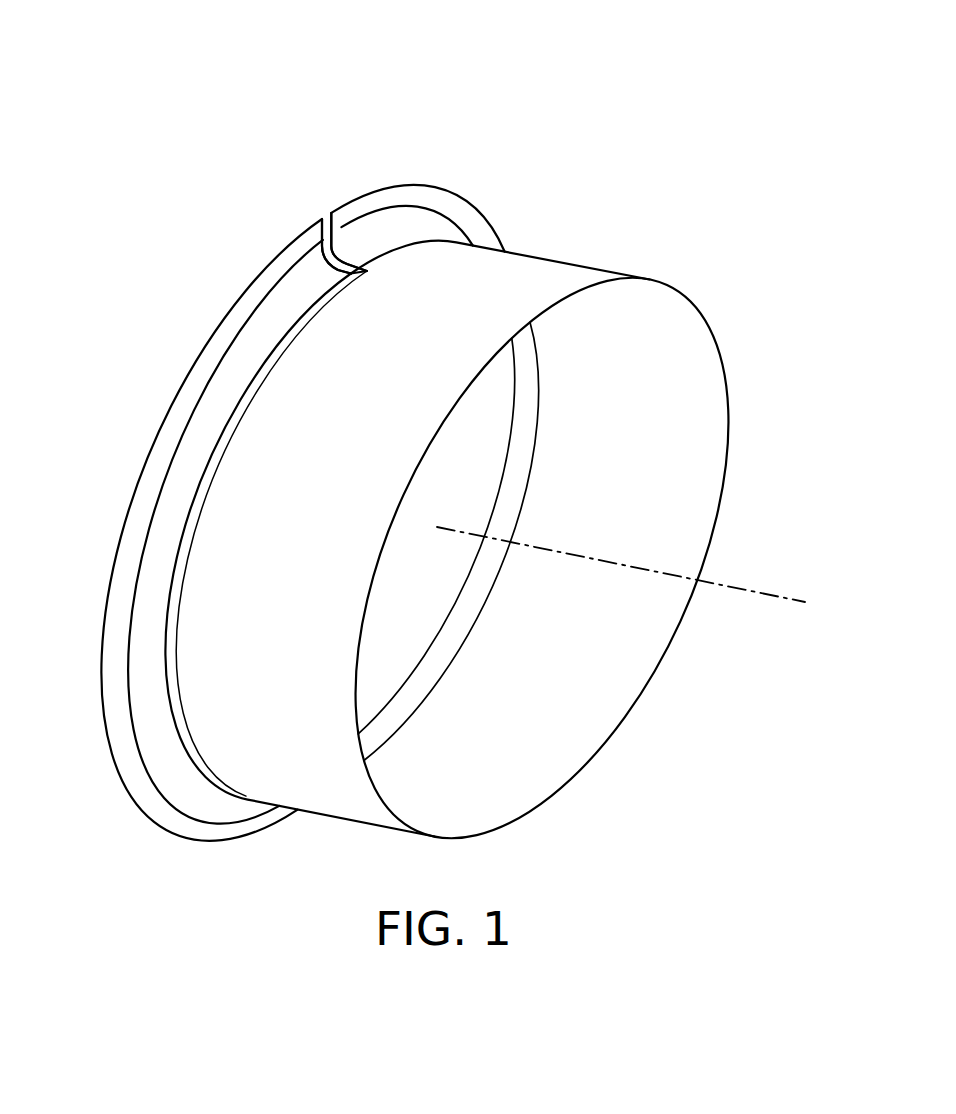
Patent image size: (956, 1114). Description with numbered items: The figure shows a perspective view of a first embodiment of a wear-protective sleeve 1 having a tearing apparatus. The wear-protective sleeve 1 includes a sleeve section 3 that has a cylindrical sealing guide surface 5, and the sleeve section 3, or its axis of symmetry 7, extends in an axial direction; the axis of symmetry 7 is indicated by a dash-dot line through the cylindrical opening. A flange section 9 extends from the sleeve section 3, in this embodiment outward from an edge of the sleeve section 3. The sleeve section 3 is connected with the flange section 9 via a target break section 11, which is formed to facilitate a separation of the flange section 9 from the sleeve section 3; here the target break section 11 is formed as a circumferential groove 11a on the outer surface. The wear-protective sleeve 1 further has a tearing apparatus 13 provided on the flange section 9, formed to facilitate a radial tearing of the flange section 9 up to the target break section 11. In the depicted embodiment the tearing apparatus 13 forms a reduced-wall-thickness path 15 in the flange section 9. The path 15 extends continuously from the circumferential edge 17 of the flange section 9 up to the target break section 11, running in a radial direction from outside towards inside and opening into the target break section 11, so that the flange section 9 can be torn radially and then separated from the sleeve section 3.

The wear-protective sleeve 1 is at (441, 447).
The sleeve section 3 is at (485, 528).
The cylindrical sealing guide surface 5 is at (522, 280).
The axis of symmetry 7 is at (723, 578).
The flange section 9 is at (280, 442).
The target break section 11 is at (264, 515).
The circumferential groove 11a is at (247, 407).
The tearing apparatus 13 is at (323, 209).
The reduced-wall-thickness path 15 is at (333, 257).
The circumferential edge 17 is at (228, 312).